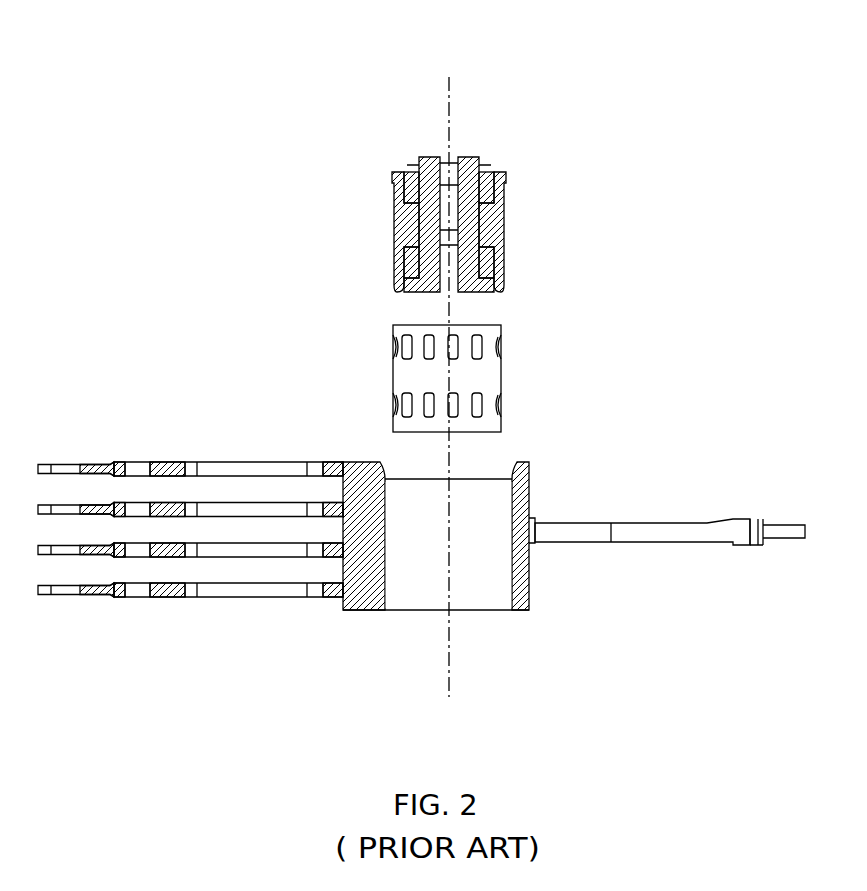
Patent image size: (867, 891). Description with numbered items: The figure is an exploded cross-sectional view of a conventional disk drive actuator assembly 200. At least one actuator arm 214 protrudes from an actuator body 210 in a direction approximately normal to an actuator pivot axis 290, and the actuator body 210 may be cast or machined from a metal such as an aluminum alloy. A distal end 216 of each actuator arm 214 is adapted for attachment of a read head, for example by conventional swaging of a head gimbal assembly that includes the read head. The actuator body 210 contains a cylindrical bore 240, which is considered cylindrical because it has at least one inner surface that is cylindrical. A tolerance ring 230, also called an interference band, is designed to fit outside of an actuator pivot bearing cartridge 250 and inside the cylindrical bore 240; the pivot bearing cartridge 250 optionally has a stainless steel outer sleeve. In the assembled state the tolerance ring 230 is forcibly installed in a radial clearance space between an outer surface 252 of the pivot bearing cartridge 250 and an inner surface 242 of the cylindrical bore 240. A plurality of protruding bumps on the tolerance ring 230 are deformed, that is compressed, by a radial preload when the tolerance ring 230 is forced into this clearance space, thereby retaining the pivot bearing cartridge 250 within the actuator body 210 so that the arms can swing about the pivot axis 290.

The disk drive actuator assembly 200 is at (612, 56).
The actuator pivot axis 290 is at (449, 105).
The actuator pivot bearing cartridge 250 is at (495, 225).
The outer surface 252 is at (497, 263).
The tolerance ring 230 is at (493, 377).
The actuator body 210 is at (439, 563).
The cylindrical bore 240 is at (405, 598).
The inner surface 242 is at (510, 598).
The actuator arm 214 is at (243, 510).
The distal end 216 is at (62, 473).